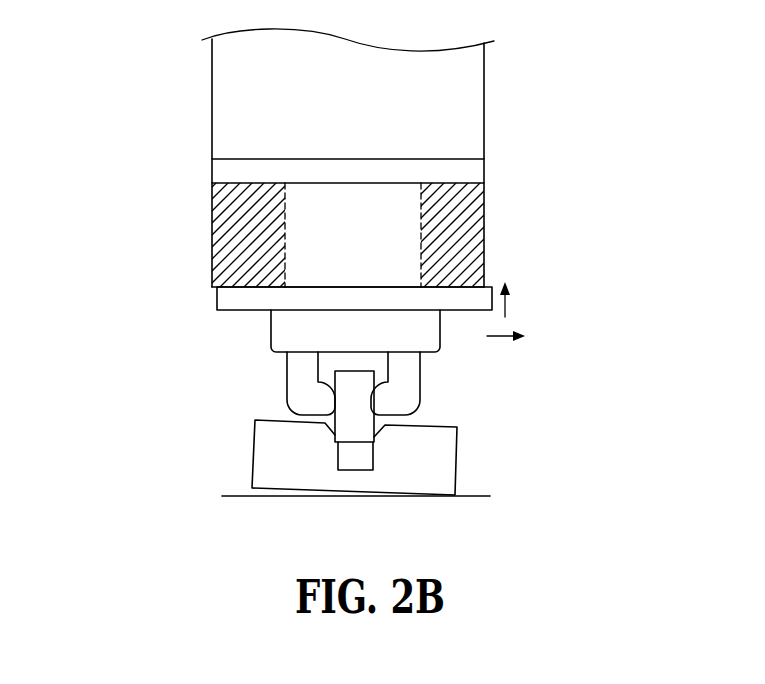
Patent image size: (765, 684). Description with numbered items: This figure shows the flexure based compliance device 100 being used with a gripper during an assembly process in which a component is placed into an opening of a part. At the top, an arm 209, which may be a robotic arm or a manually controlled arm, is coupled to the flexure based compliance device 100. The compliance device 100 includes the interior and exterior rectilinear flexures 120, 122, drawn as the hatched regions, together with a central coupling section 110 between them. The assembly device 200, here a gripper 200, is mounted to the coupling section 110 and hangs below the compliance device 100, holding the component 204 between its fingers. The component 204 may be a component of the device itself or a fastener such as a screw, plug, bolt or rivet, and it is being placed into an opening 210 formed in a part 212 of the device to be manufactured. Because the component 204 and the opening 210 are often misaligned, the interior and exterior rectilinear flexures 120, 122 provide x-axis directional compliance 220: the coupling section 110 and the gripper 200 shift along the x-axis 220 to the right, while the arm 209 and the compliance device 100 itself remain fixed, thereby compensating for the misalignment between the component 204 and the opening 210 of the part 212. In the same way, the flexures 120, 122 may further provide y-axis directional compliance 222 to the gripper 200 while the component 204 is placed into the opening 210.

The arm 209 is at (212, 123).
The flexure based compliance device 100 is at (212, 263).
The coupling section 110 is at (279, 222).
The interior rectilinear flexure 120 is at (380, 232).
The exterior rectilinear flexure 122 is at (491, 208).
The assembly device 200 is at (213, 300).
The component 204 is at (375, 432).
The opening 210 is at (336, 465).
The part 212 is at (456, 460).
The x-axis directional compliance 220 is at (502, 337).
The y-axis directional compliance 222 is at (507, 312).